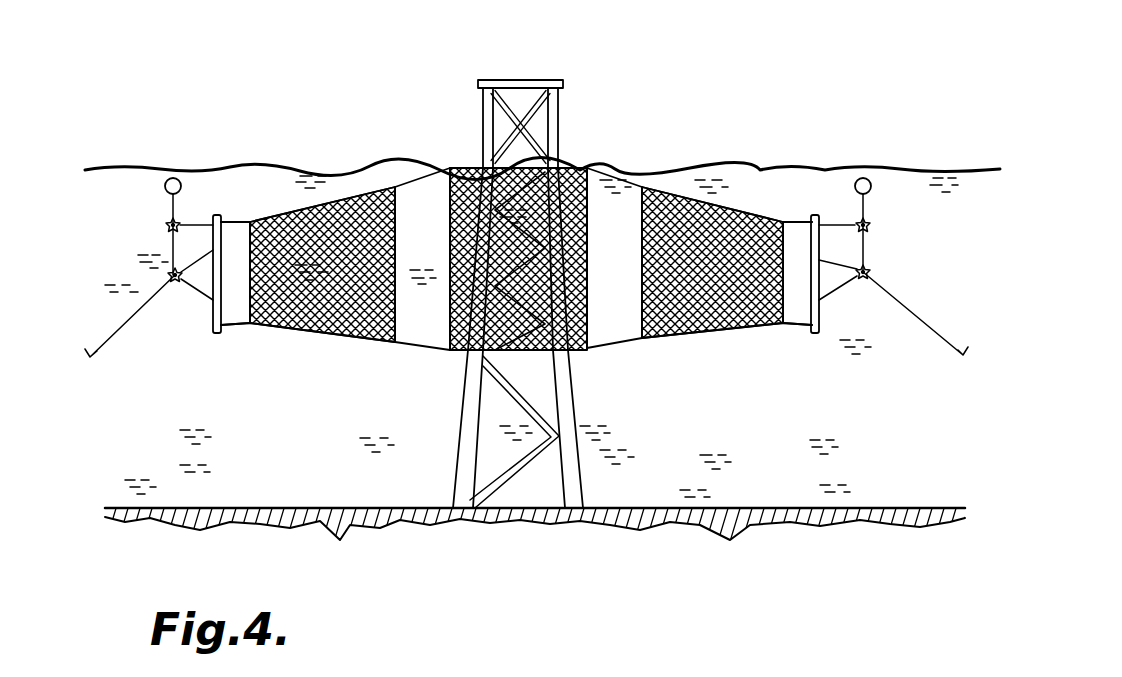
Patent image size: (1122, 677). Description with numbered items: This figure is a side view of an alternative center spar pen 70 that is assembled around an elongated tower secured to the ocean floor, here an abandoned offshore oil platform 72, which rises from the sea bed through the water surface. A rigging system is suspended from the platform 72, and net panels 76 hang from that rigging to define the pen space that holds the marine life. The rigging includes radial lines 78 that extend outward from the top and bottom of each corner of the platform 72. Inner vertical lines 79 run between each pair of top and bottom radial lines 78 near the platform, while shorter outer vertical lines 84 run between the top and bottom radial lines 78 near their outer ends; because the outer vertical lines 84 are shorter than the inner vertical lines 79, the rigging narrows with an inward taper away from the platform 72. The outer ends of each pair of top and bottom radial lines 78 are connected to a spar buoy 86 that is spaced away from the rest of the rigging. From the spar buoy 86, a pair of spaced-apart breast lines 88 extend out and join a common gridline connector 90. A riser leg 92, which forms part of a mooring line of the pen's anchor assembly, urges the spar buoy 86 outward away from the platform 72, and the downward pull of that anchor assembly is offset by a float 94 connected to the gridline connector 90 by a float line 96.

The center spar pen 70 is at (722, 113).
The offshore oil platform 72 is at (562, 120).
The net panels 76 is at (327, 333).
The radial lines 78 is at (240, 222).
The inner vertical lines 79 is at (398, 262).
The outer vertical lines 84 is at (243, 325).
The spar buoy 86 is at (225, 215).
The breast lines 88 is at (195, 268).
The gridline connector 90 is at (165, 227).
The riser leg 92 is at (113, 335).
The float 94 is at (173, 178).
The float line 96 is at (165, 200).